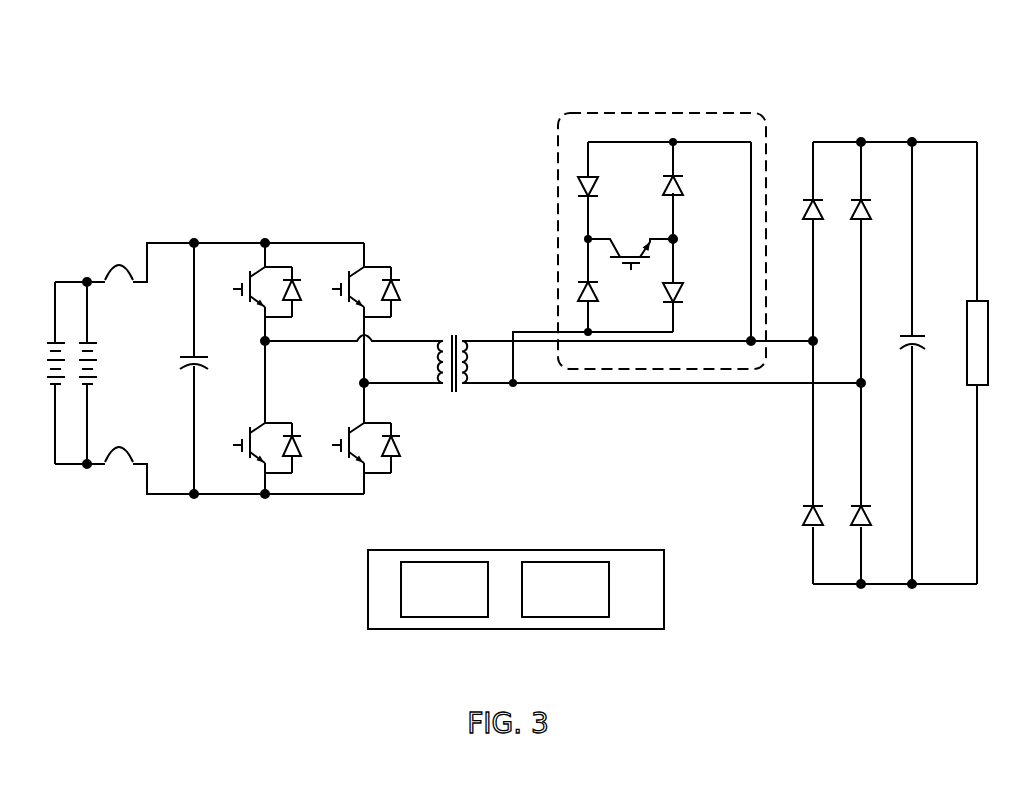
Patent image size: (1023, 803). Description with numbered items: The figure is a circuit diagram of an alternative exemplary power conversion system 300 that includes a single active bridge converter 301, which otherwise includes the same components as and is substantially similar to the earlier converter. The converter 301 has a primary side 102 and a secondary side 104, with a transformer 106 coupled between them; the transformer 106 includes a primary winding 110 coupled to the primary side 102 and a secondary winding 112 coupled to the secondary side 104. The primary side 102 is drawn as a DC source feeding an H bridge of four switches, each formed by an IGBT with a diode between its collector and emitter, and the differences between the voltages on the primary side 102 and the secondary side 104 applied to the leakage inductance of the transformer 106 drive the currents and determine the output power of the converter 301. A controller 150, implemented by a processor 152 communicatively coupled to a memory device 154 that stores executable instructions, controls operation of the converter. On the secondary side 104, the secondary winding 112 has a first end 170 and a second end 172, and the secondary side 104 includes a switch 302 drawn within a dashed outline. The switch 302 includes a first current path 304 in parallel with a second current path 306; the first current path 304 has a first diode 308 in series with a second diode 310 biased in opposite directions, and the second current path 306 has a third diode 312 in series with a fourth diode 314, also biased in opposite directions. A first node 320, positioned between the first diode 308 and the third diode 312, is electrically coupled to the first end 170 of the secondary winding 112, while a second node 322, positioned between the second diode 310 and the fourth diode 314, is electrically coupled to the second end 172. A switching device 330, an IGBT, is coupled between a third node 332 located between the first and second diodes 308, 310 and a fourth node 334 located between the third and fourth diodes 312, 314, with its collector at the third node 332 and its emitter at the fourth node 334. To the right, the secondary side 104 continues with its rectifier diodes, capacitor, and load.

The power conversion system 300 is at (503, 55).
The single active bridge converter 301 is at (467, 258).
The switch 302 is at (692, 112).
The first current path 304 is at (603, 142).
The second current path 306 is at (675, 168).
The first diode 308 is at (594, 183).
The second diode 310 is at (596, 292).
The third diode 312 is at (682, 190).
The fourth diode 314 is at (683, 298).
The first node 320 is at (673, 142).
The second node 322 is at (592, 331).
The switching device 330 is at (607, 239).
The third node 332 is at (588, 239).
The fourth node 334 is at (676, 240).
The primary side 102 is at (207, 243).
The secondary side 104 is at (888, 142).
The transformer 106 is at (455, 335).
The primary winding 110 is at (440, 354).
The secondary winding 112 is at (466, 365).
The first end 170 is at (497, 340).
The second end 172 is at (553, 388).
The controller 150 is at (598, 550).
The processor 152 is at (427, 601).
The memory device 154 is at (548, 601).